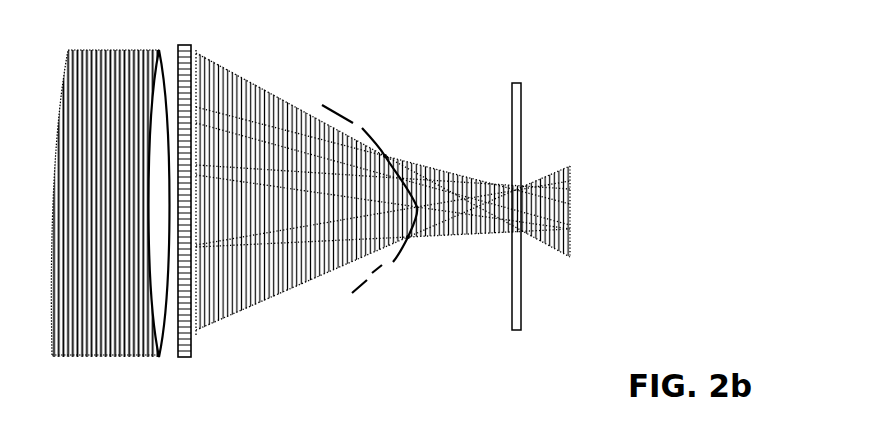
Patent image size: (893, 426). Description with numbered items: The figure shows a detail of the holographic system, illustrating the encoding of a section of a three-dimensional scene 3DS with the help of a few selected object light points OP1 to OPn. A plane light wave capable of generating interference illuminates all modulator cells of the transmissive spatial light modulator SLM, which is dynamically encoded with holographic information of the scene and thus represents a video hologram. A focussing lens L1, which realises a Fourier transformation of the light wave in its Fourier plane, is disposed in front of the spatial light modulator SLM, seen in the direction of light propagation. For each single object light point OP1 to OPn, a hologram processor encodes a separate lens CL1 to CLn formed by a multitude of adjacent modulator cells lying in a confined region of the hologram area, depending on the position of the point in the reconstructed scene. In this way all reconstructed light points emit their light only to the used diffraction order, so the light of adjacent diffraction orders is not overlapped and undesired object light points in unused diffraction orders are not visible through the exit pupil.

The focussing lens L1 is at (110, 187).
The spatial light modulator SLM is at (209, 187).
The lens encoded for object point n CLn is at (197, 75).
The lens encoded for object point 1 CL1 is at (197, 313).
The object light point n OPn is at (410, 137).
The object light point 1 OP1 is at (412, 237).
The three-dimensional scene 3DS is at (363, 222).